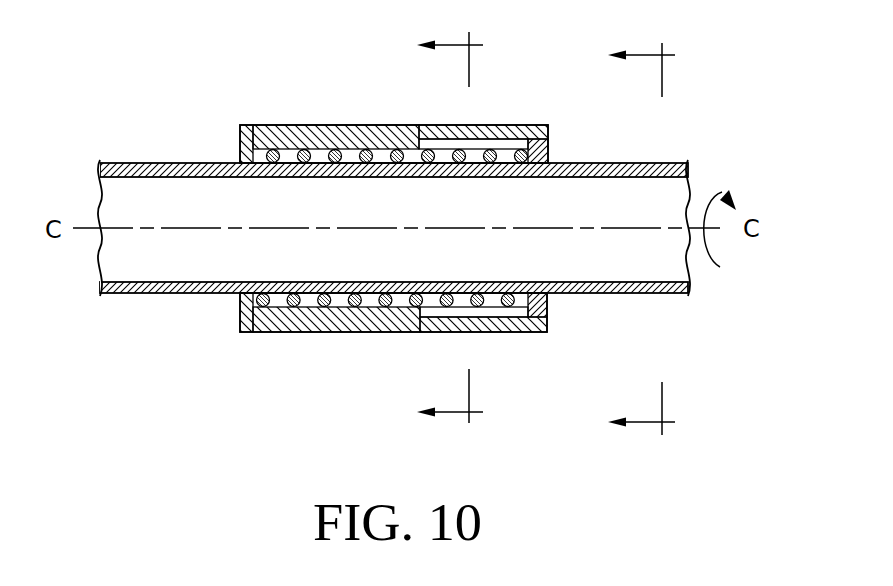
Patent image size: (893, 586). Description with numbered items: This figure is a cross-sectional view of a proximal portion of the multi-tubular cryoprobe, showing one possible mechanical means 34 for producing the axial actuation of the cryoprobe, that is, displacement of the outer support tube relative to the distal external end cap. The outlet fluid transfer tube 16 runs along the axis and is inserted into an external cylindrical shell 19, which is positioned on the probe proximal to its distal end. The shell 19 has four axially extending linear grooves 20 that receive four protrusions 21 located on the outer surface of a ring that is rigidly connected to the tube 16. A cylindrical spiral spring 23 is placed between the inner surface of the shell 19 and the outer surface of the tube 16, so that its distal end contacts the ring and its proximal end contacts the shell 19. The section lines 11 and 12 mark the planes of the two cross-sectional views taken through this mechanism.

The section line 11- 11 is at (641, 241).
The section line 12- 12 is at (450, 231).
The outlet fluid transfer tube 16 is at (650, 163).
The external cylindrical shell 19 is at (282, 137).
The axially extending linear grooves 20 is at (432, 143).
The protrusions 21 is at (548, 150).
The cylindrical spiral spring 23 is at (318, 307).
The mechanical means 34 is at (210, 107).